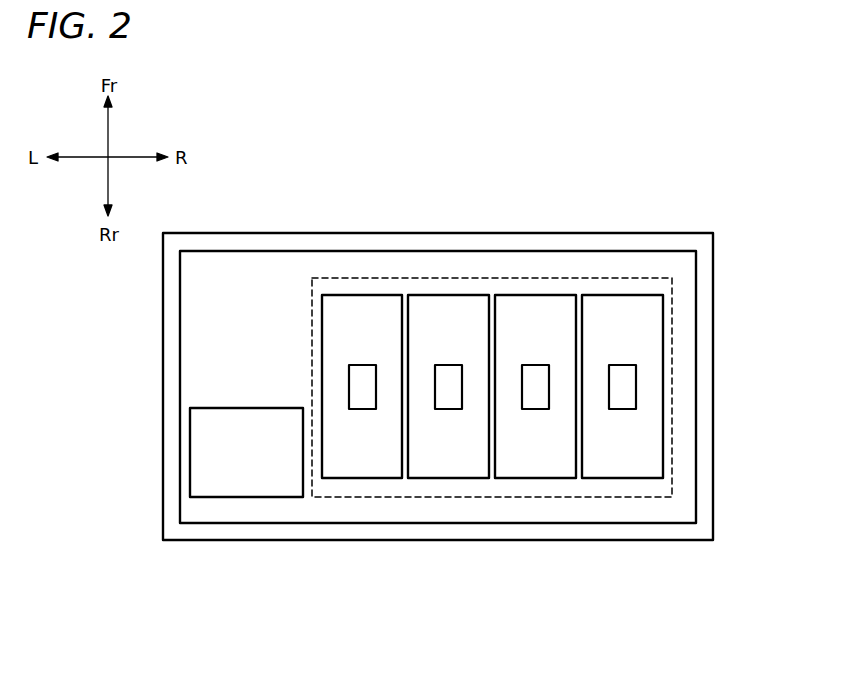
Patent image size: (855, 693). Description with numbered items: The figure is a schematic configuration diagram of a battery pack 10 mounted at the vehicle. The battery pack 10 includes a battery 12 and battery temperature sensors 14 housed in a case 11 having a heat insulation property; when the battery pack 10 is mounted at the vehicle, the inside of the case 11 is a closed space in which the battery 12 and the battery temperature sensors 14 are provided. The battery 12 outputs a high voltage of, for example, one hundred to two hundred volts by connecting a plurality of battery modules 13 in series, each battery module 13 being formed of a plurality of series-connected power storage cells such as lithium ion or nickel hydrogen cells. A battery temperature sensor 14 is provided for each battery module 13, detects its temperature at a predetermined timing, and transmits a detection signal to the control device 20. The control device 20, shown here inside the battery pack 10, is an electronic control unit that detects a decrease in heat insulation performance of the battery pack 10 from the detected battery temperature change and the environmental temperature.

The battery pack 10 is at (502, 112).
The case 11 is at (713, 402).
The battery 12 is at (673, 295).
The battery module 13 is at (368, 295).
The battery temperature sensor 14 is at (449, 387).
The control device 20 is at (190, 477).